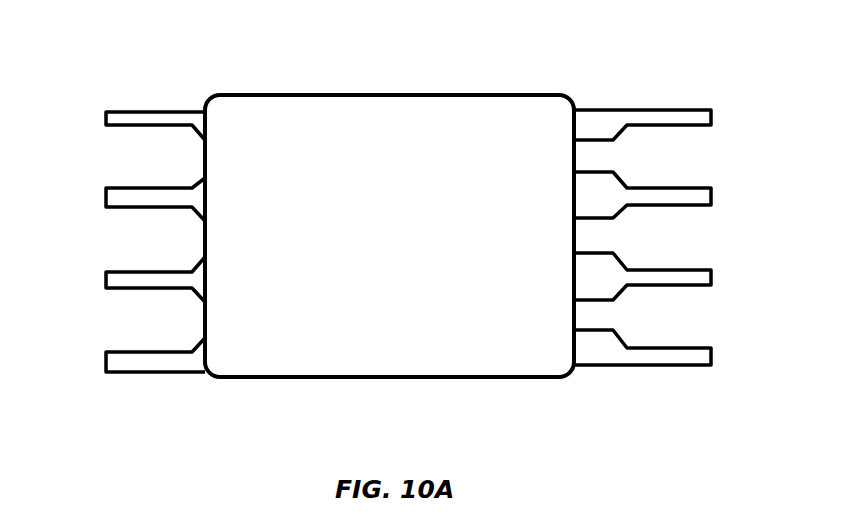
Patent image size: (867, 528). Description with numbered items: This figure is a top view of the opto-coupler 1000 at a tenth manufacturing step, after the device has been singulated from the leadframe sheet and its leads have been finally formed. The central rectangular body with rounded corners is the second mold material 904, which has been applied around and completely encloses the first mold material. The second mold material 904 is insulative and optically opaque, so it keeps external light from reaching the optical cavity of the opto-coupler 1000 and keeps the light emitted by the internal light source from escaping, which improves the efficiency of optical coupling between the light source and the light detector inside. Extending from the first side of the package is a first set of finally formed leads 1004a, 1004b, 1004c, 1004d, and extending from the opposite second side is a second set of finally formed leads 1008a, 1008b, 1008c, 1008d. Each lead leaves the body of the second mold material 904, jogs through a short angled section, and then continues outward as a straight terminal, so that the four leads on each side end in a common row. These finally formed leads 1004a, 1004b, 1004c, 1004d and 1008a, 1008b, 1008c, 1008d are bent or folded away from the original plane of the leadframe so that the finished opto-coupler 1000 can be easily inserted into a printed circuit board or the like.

The second mold material 904 is at (392, 93).
The opto-coupler 1000 is at (253, 400).
The first finally formed lead of the first set 1004a is at (633, 117).
The second finally formed lead of the first set 1004b is at (665, 193).
The third finally formed lead of the first set 1004c is at (672, 270).
The fourth finally formed lead of the first set 1004d is at (668, 367).
The first finally formed lead of the second set 1008a is at (162, 118).
The second finally formed lead of the second set 1008b is at (135, 203).
The third finally formed lead of the second set 1008c is at (143, 280).
The fourth finally formed lead of the second set 1008d is at (155, 373).